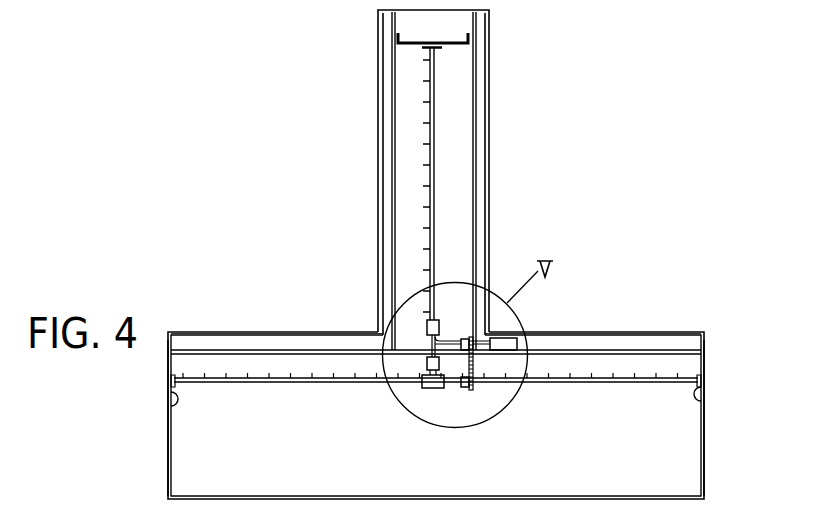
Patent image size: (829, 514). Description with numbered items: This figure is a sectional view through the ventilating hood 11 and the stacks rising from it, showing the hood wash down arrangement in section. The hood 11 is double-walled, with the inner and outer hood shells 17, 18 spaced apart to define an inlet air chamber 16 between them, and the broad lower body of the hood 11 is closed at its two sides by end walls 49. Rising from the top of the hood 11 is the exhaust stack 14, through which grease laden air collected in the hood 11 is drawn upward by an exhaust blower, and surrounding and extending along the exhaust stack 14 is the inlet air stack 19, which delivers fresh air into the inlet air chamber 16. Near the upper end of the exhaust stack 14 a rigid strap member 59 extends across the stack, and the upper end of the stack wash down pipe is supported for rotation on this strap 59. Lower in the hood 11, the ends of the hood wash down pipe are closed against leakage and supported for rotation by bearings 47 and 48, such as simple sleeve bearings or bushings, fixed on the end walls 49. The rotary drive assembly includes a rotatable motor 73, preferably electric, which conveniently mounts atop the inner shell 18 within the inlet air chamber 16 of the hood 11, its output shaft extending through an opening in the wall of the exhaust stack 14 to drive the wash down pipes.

The ventilating hood 11 is at (705, 367).
The exhaust stack 14 is at (475, 78).
The inlet air chamber 16 is at (615, 340).
The inner hood shell 17 is at (665, 330).
The outer hood shell 18 is at (683, 352).
The inlet air stack 19 is at (489, 120).
The bearing 47 is at (168, 404).
The bearing 48 is at (703, 401).
The end walls 49 is at (168, 466).
The strap member 59 is at (454, 41).
The motor 73 is at (505, 345).